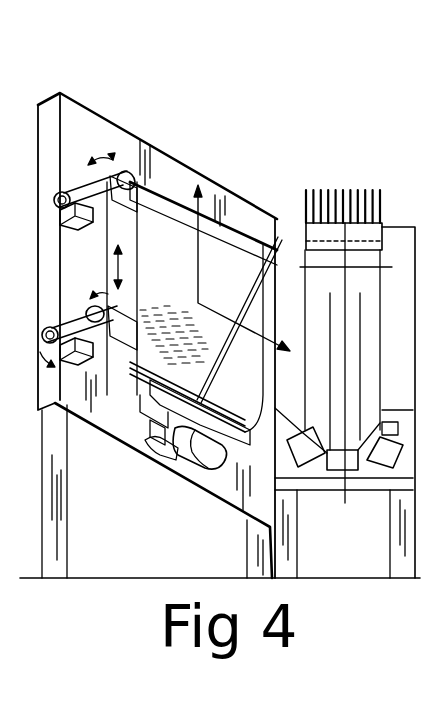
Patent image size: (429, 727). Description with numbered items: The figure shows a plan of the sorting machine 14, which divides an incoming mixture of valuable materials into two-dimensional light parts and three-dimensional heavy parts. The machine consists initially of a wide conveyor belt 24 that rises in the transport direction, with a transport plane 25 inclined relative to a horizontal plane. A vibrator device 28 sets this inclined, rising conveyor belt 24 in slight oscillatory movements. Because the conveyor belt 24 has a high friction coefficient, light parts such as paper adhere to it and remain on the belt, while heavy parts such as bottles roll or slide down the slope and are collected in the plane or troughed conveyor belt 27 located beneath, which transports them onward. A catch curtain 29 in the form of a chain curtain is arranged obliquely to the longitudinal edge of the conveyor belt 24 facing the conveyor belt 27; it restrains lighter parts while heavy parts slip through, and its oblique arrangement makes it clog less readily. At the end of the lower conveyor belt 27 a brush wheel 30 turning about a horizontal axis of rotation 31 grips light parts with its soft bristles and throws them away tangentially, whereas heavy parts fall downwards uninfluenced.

The sorting machine 14 is at (283, 153).
The conveyor belt 24 is at (177, 197).
The transport plane 25 is at (176, 266).
The troughed conveyor belt 27 is at (374, 296).
The vibrator device 28 is at (162, 458).
The catch curtain 29 is at (236, 284).
The brush wheel 30 is at (353, 189).
The horizontal axis of rotation 31 is at (372, 232).